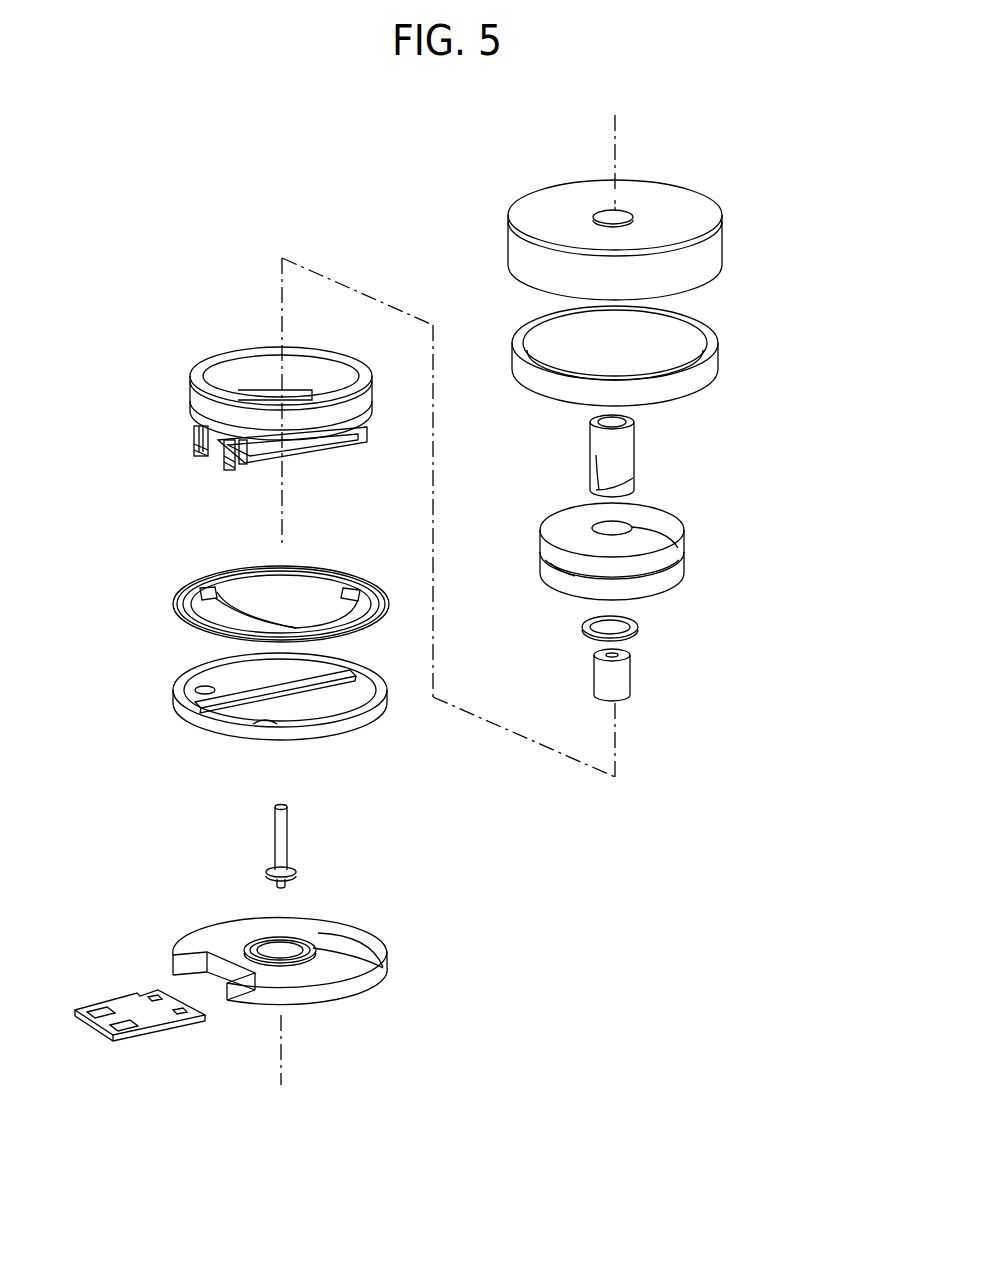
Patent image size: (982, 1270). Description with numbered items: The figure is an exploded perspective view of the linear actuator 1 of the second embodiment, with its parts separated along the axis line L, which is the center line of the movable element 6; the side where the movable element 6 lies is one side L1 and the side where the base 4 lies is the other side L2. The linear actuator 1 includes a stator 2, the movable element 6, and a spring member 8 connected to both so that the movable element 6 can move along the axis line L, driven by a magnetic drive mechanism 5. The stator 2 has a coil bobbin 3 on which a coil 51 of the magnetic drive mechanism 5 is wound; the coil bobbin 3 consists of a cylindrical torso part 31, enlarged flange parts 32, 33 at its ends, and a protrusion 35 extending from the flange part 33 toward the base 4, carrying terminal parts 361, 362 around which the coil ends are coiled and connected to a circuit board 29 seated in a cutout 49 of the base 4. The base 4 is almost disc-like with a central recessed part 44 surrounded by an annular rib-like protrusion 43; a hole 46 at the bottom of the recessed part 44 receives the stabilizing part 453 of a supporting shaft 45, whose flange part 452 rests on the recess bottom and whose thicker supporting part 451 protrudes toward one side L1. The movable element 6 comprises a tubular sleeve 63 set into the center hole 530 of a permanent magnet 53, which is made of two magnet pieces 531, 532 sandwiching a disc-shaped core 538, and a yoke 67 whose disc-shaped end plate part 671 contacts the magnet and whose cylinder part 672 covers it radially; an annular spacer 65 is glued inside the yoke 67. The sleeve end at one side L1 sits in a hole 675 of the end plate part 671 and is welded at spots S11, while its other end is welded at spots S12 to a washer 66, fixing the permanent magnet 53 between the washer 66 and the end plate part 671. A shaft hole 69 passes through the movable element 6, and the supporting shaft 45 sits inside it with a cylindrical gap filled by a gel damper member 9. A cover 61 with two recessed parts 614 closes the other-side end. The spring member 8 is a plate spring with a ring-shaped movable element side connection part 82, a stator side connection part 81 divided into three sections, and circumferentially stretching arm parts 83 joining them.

The linear actuator 1 is at (174, 252).
The stator 2 is at (82, 433).
The coil bobbin 3 is at (193, 380).
The base 4 is at (277, 847).
The magnetic drive mechanism 5 is at (467, 170).
The movable element 6 is at (811, 410).
The spring member 8 is at (336, 578).
The gel damper member 9 is at (598, 678).
The circuit board 29 is at (135, 1018).
The torso part 31 is at (340, 386).
The flange part 32 is at (330, 352).
The flange part 33 is at (365, 424).
The protrusion 35 is at (373, 455).
The terminal part 361 is at (203, 458).
The terminal part 362 is at (230, 473).
The annular rib-like protrusion 43 is at (340, 934).
The recessed part 44 is at (383, 968).
The supporting shaft 45 is at (223, 933).
The hole 46 is at (280, 950).
The cutout 49 is at (221, 995).
The supporting part 451 is at (286, 822).
The flange part 452 is at (296, 871).
The stabilizing part 453 is at (288, 882).
The coil 51 is at (218, 412).
The permanent magnet 53 is at (465, 210).
The center hole 530 is at (682, 568).
The magnet piece 531 is at (557, 528).
The magnet piece 532 is at (543, 582).
The disc-shaped core 538 is at (568, 574).
The cover 61 is at (375, 718).
The recessed part 614 is at (227, 737).
The sleeve 63 is at (627, 460).
The annular spacer 65 is at (690, 383).
The washer 66 is at (640, 625).
The yoke 67 is at (698, 272).
The end plate part 671 is at (677, 200).
The cylinder part 672 is at (712, 252).
The hole 675 is at (598, 210).
The shaft hole 69 is at (616, 418).
The stator side connection part 81 is at (296, 628).
The movable element side connection part 82 is at (188, 596).
The arm part 83 is at (200, 634).
The welding spots S11 is at (585, 422).
The welding spots S12 is at (597, 490).
The axis line L is at (623, 177).
The one side L1 is at (617, 435).
The other side L2 is at (283, 1064).